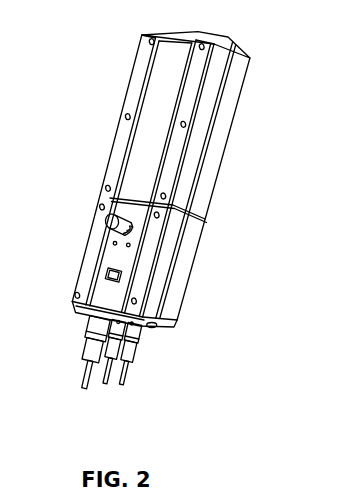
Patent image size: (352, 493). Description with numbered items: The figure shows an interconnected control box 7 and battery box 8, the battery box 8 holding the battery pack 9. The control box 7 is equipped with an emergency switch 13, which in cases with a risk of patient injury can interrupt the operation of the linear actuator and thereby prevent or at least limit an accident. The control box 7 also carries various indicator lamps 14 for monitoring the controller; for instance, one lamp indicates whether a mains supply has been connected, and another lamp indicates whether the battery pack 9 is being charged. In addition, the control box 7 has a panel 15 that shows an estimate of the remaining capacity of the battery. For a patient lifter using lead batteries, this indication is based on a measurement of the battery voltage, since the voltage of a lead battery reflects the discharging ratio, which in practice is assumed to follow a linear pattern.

The control box 7 is at (86, 270).
The battery box 8 is at (222, 162).
The battery pack 9 is at (123, 138).
The emergency switch 13 is at (111, 221).
The indicator lamps 14 is at (130, 245).
The panel 15 is at (115, 275).